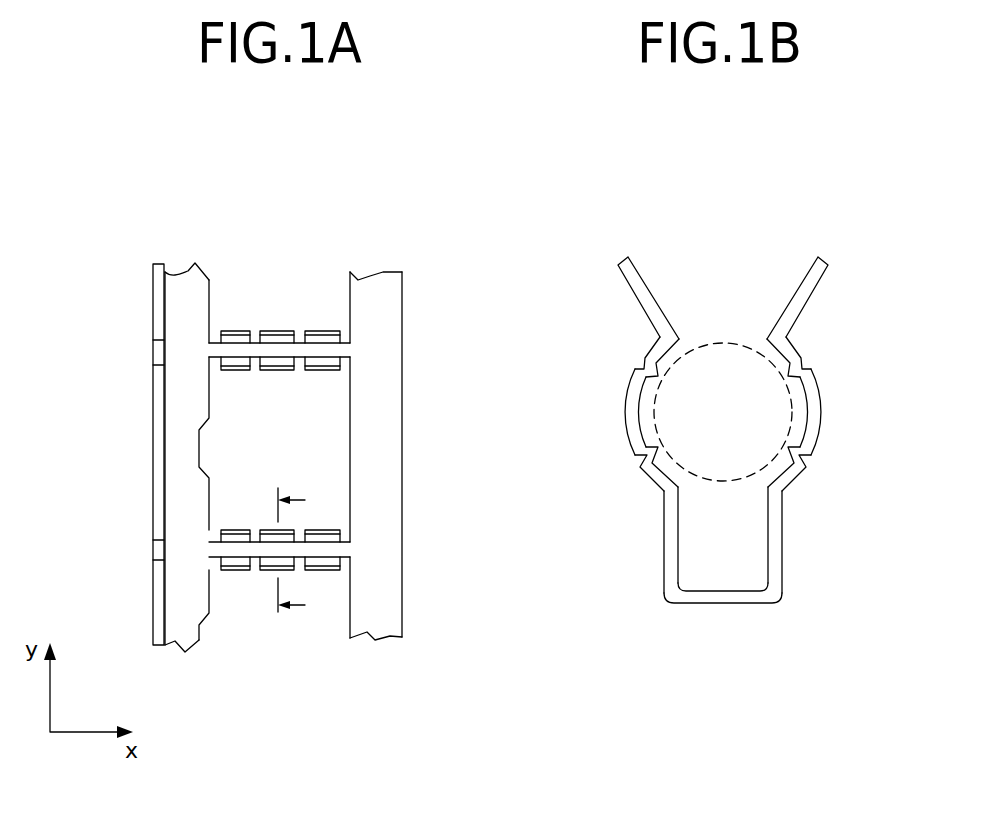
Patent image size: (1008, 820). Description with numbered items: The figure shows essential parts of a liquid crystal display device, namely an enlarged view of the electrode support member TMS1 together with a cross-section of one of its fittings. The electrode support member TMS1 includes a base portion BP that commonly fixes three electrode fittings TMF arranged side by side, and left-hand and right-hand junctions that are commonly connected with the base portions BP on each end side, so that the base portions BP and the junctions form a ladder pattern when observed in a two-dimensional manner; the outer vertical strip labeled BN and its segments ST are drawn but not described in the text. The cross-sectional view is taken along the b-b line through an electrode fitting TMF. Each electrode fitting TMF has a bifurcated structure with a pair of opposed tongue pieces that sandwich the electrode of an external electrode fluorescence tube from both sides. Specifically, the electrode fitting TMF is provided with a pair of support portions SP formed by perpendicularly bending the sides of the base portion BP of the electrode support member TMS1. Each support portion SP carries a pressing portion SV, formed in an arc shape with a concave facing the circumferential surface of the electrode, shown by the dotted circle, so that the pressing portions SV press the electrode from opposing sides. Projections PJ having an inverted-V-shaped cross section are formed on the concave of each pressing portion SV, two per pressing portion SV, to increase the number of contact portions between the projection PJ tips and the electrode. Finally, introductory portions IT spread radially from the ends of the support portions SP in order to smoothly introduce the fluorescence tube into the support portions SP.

In FIG. 1A, the electrode support member TMS1 is at (136, 233).
In FIG. 1A, the bus bar / base member BN is at (160, 305).
In FIG. 1A, the strip / slit portion ST is at (157, 353).
In FIG. 1A, the electrode fitting TMF is at (237, 330).
In FIG. 1B, the electrode fitting TMF is at (608, 468).
In FIG. 1A, the base portion BP is at (337, 348).
In FIG. 1B, the base portion BP is at (724, 597).
In FIG. 1A, the b-b line b is at (302, 551).
In FIG. 1B, the introductory portion IT is at (803, 280).
In FIG. 1B, the projection PJ is at (640, 367).
In FIG. 1B, the pressing portion SV is at (628, 413).
In FIG. 1B, the support portion SP is at (672, 570).